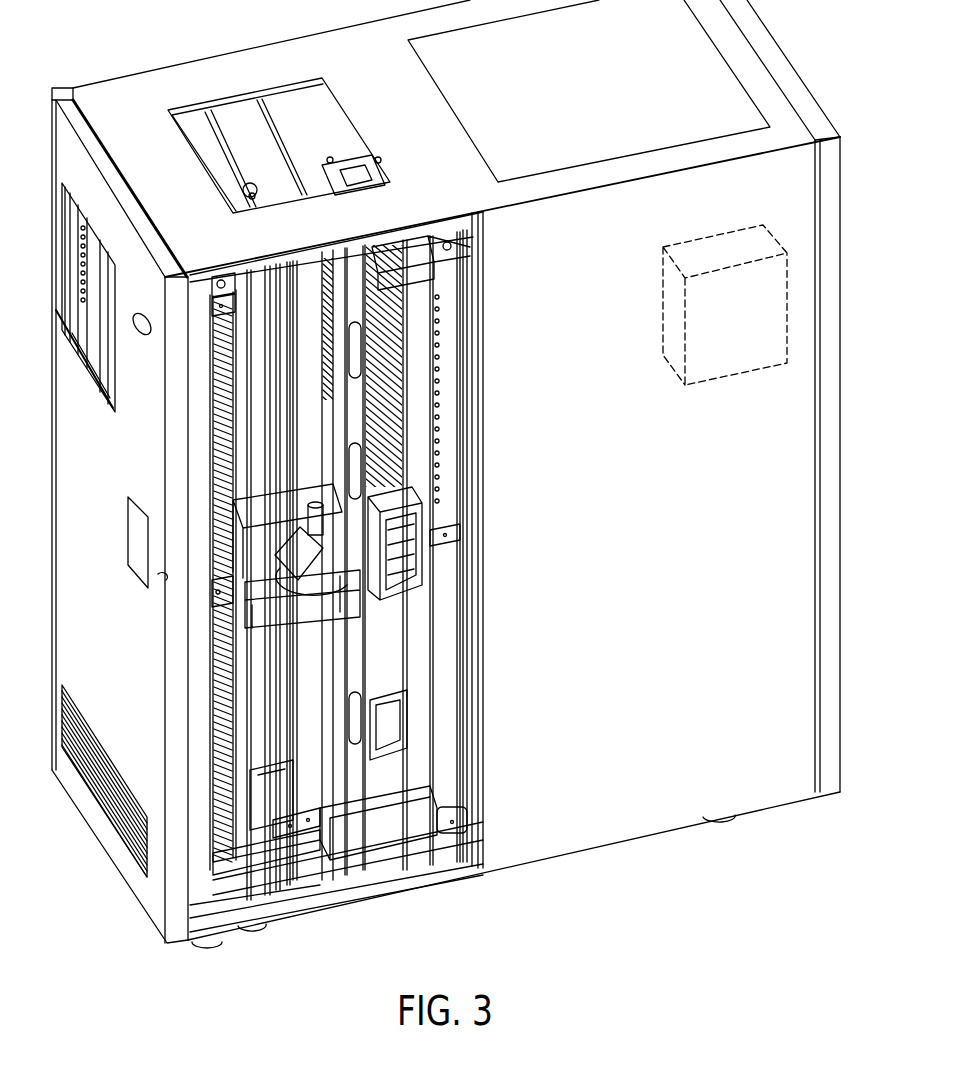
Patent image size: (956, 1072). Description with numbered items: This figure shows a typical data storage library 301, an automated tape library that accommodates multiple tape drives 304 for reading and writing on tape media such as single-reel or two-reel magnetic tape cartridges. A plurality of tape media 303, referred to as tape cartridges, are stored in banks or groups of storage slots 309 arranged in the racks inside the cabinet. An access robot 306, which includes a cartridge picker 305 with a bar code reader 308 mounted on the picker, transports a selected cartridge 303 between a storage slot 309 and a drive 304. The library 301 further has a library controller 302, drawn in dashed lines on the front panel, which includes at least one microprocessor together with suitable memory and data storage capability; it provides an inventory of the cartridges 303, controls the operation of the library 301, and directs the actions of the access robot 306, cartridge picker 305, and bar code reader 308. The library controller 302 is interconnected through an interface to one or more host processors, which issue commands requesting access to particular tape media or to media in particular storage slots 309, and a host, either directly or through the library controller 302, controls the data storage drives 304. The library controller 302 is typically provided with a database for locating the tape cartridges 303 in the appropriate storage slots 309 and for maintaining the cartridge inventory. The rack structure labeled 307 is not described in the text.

The data storage library 301 is at (236, 66).
The library controller 302 is at (658, 294).
The tape media 303 is at (407, 410).
The tape drives 304 is at (417, 595).
The cartridge picker 305 is at (380, 602).
The access robot 306 is at (277, 828).
The left storage rack 307 is at (213, 397).
The bar code reader 308 is at (213, 510).
The storage slots 309 is at (364, 418).